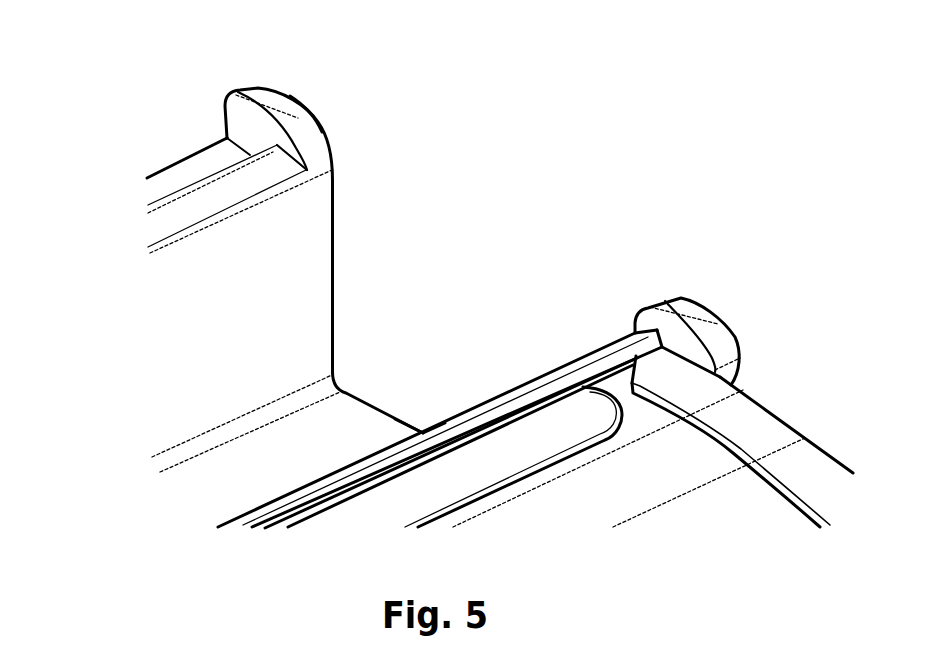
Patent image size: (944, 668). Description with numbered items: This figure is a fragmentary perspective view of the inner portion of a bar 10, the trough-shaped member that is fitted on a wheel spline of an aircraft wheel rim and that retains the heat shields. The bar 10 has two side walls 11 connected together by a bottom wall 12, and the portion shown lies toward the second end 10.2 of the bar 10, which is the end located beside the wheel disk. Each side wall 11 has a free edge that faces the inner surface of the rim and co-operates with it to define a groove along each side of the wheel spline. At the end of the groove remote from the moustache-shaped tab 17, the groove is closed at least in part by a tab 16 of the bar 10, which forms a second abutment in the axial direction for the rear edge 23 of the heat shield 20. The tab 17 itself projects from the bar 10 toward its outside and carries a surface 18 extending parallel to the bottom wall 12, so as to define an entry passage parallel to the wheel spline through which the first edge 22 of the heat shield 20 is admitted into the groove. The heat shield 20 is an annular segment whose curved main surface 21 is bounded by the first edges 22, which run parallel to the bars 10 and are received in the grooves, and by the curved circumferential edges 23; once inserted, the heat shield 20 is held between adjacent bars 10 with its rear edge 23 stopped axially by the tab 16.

The bar 10 is at (133, 304).
The second end 10.2 is at (408, 412).
The side wall 11 is at (320, 240).
The bottom wall 12 is at (352, 407).
The tab 16 is at (270, 102).
The moustache-shaped tab 17 is at (292, 110).
The surface 18 is at (187, 177).
The heat shield 20 is at (737, 504).
The main surface 21 is at (645, 500).
The first edge 22 is at (588, 390).
The edge 23 is at (820, 443).